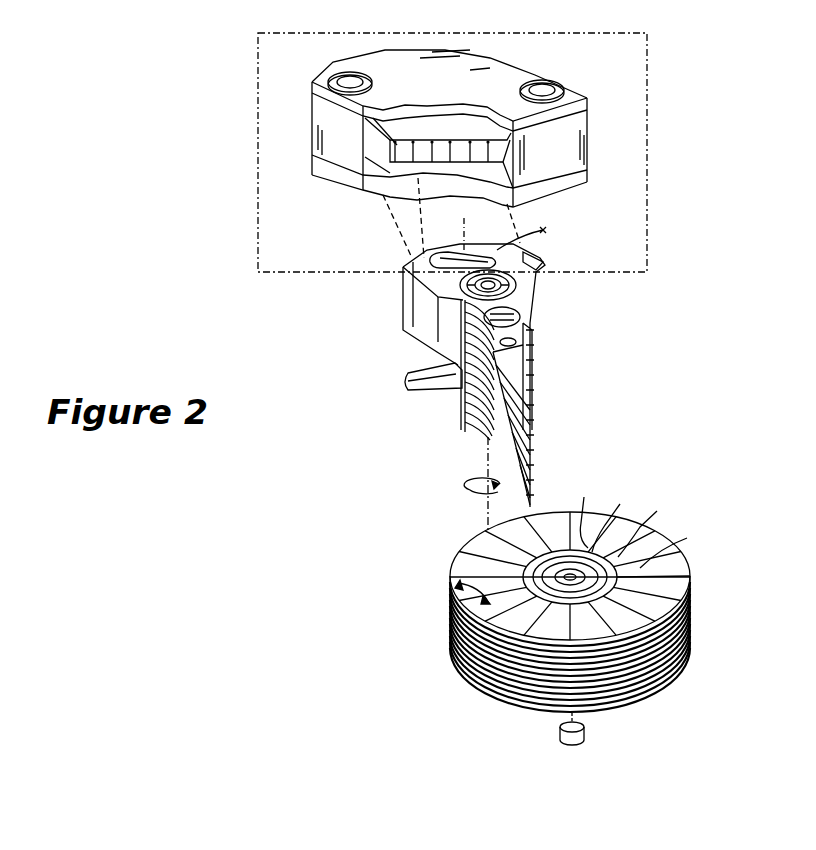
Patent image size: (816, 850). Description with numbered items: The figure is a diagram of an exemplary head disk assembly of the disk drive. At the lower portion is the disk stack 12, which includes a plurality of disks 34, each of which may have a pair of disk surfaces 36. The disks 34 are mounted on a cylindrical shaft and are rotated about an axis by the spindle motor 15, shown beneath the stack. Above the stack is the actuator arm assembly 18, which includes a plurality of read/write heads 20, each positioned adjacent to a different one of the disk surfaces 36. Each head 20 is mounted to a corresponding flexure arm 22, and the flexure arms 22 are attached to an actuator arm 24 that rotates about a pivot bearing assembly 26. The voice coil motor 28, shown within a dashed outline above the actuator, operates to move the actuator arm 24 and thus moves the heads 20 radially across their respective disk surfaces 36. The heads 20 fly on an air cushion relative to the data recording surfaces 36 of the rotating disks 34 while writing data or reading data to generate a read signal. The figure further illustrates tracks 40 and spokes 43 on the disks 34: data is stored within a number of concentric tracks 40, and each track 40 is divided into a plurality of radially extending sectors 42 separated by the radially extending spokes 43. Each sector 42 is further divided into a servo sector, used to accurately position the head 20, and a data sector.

The disk stack 12 is at (572, 591).
The spindle motor 15 is at (559, 731).
The actuator arm assembly 18 is at (570, 362).
The read/write head 20 is at (527, 417).
The flexure arm 22 is at (528, 378).
The actuator arm 24 is at (522, 328).
The pivot bearing assembly 26 is at (512, 284).
The voice coil motor 28 is at (647, 142).
The disk 34 is at (606, 694).
The disk surface 36 is at (673, 587).
The track 40 is at (643, 520).
The sector 42 is at (467, 603).
The spoke 43 is at (488, 575).